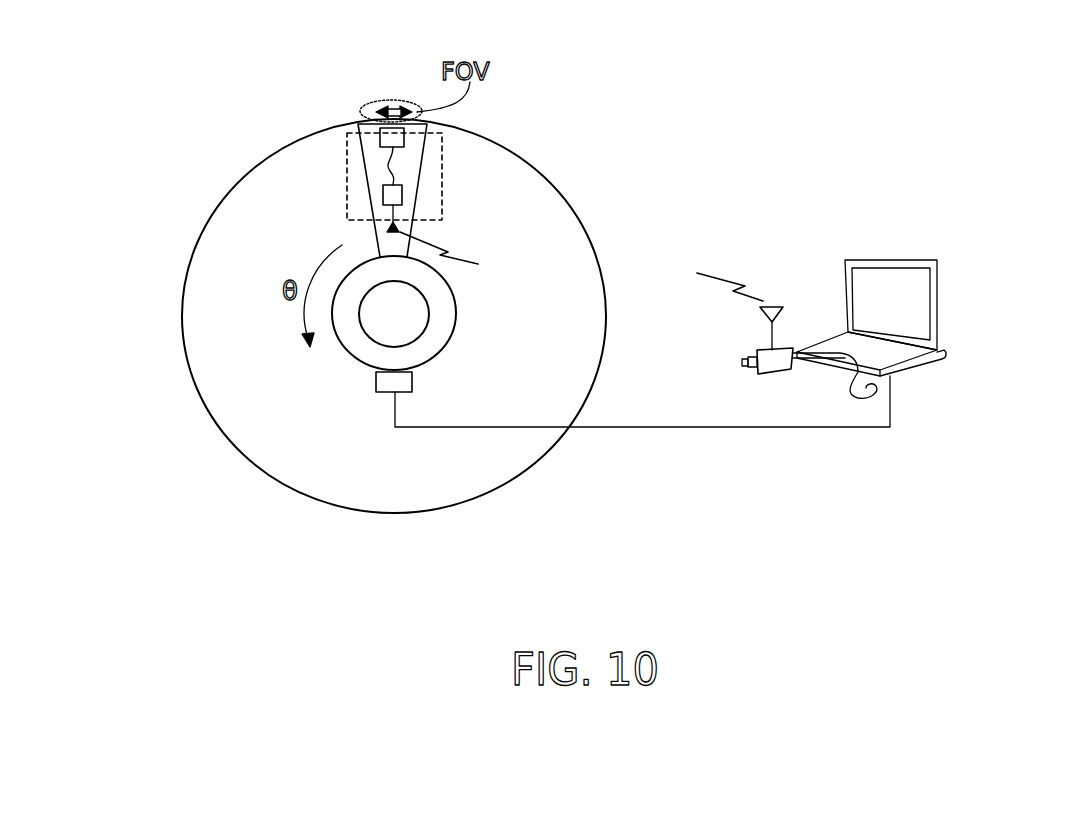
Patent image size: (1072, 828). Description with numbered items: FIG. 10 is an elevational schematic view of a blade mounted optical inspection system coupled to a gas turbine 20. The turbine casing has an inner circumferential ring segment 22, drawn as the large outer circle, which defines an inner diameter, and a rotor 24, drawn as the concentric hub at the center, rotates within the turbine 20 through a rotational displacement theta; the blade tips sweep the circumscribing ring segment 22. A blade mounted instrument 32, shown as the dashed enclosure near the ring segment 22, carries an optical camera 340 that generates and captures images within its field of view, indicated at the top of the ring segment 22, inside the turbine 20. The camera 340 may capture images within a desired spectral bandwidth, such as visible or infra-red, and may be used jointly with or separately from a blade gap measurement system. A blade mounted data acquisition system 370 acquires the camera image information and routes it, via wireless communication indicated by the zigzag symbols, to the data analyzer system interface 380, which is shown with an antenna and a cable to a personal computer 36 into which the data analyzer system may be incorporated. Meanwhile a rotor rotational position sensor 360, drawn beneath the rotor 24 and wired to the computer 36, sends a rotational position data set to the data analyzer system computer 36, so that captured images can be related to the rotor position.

The gas turbine 20 is at (380, 330).
The inner circumferential ring segment 22 is at (198, 387).
The rotor 24 is at (442, 312).
The blade mounted instrument 32 is at (336, 143).
The personal computer 36 is at (900, 280).
The optical camera 340 is at (404, 140).
The rotor rotational position sensor 360 is at (405, 380).
The blade mounted data acquisition system 370 is at (383, 198).
The data analyzer system interface 380 is at (780, 375).